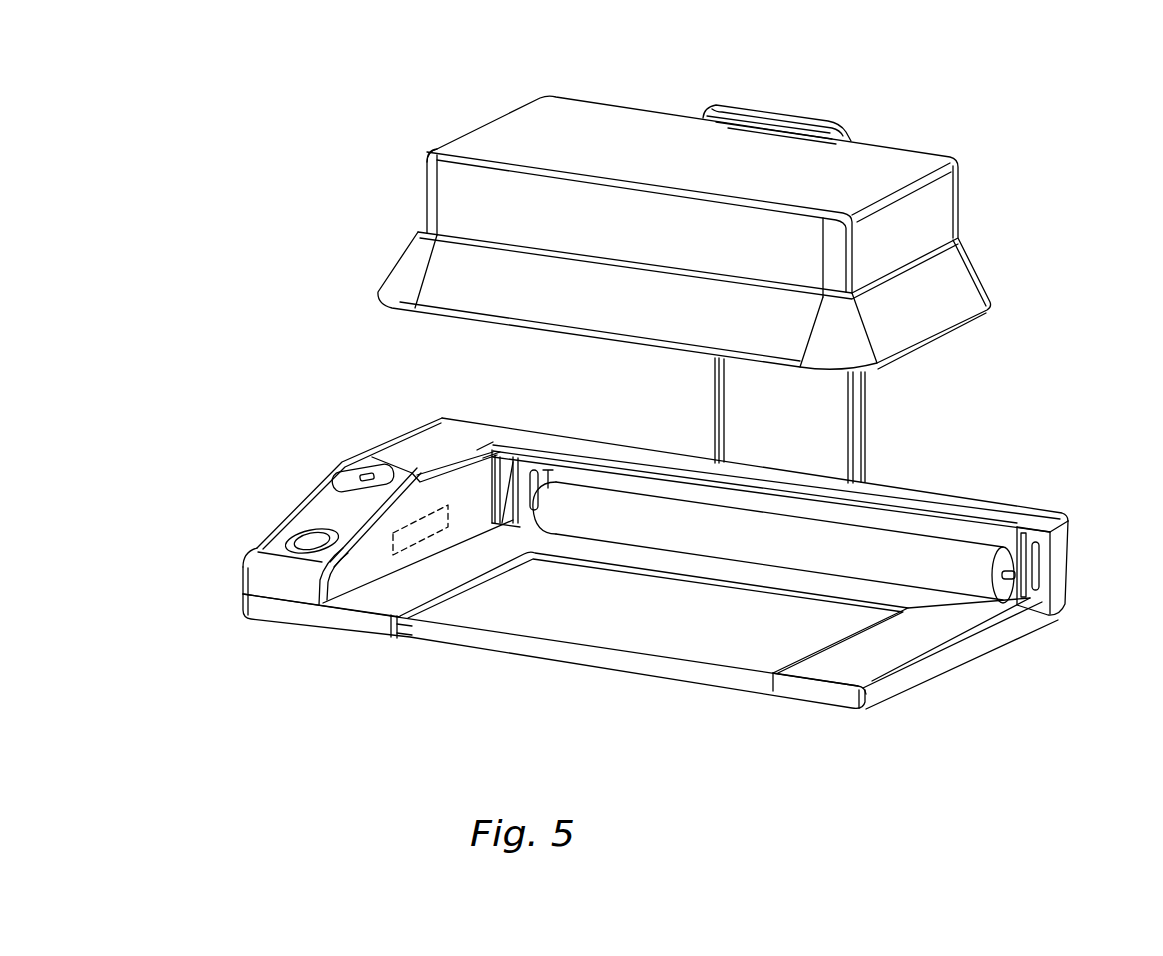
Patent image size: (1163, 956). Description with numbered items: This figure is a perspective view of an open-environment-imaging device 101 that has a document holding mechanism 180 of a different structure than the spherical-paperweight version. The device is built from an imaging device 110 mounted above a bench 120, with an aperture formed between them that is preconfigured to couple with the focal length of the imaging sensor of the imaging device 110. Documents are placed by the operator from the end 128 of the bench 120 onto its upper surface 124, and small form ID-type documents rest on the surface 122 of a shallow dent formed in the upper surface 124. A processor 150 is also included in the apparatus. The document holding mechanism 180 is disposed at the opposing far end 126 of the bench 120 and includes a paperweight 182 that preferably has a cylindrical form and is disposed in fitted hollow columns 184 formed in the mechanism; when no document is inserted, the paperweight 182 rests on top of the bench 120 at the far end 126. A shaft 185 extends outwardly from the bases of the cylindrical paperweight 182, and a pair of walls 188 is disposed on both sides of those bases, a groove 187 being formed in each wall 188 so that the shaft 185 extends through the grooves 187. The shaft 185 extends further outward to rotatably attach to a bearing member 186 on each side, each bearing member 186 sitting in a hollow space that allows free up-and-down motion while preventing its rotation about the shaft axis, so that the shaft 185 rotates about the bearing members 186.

The device 101 is at (366, 128).
The imaging device 110 is at (968, 207).
The bench 120 is at (385, 441).
The surface 122 is at (510, 607).
The upper surface 124 is at (902, 647).
The far end 126 is at (1070, 591).
The end 128 is at (374, 625).
The processor 150 is at (422, 518).
The document holding mechanism 180 is at (1090, 518).
The paperweight 182 is at (712, 545).
The hollow columns 184 is at (692, 497).
The shaft 185 is at (1006, 585).
The bearing member 186 is at (505, 455).
The groove 187 is at (533, 470).
The walls 188 is at (548, 472).